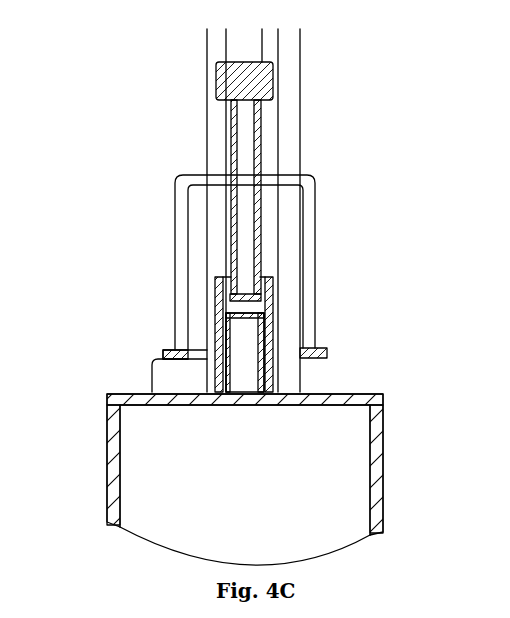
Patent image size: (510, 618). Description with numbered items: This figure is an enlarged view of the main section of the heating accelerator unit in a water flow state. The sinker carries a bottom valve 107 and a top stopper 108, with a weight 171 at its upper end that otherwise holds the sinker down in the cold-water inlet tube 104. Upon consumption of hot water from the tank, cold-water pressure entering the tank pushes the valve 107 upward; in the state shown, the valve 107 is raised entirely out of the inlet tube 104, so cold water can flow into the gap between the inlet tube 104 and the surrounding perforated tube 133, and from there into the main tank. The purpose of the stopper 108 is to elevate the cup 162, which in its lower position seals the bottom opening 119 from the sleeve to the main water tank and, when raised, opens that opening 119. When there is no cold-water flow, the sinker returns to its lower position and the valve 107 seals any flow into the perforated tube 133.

The cold-water inlet tube 104 is at (243, 352).
The bottom valve 107 is at (256, 296).
The top stopper 108 is at (262, 178).
The bottom opening 119 is at (150, 371).
The perforated tube 133 is at (215, 289).
The cup 162 is at (176, 179).
The weight 171 is at (248, 83).